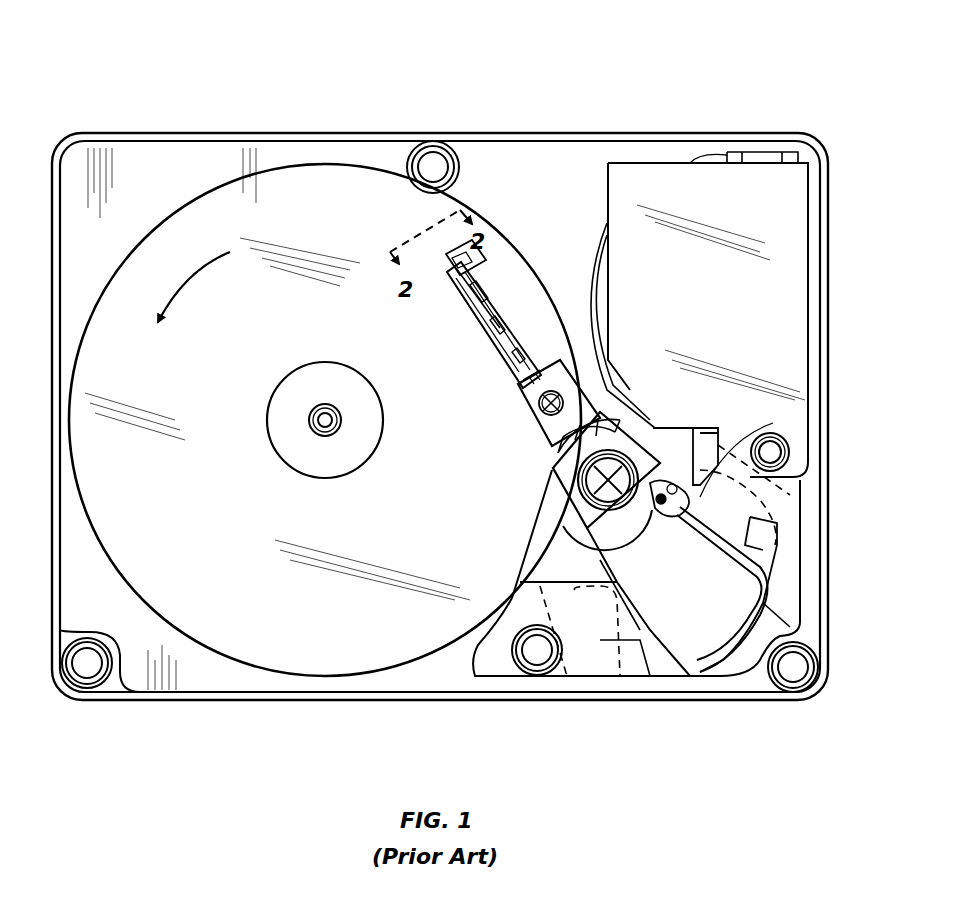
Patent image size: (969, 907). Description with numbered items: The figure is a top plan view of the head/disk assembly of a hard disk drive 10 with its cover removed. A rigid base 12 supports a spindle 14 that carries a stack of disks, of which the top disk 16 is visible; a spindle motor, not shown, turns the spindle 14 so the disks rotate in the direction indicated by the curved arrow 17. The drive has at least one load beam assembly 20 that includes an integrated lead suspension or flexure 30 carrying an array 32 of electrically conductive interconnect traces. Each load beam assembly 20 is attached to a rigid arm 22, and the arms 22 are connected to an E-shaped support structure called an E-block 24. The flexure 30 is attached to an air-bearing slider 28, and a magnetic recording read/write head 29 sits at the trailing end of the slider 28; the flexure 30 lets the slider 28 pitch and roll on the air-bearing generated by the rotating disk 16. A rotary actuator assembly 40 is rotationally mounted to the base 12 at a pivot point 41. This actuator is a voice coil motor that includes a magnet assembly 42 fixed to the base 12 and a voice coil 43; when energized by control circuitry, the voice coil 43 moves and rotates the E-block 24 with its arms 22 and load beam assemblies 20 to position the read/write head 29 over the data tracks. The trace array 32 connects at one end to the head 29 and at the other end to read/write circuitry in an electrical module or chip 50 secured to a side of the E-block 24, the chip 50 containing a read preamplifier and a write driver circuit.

The hard disk drive 10 is at (127, 72).
The rigid base 12 is at (210, 700).
The spindle 14 is at (336, 362).
The top disk 16 is at (318, 655).
The curved arrow 17 is at (192, 283).
The load beam assembly 20 is at (510, 397).
The rigid arm 22 is at (535, 418).
The E-block 24 is at (556, 469).
The air-bearing slider 28 is at (490, 261).
The read/write head 29 is at (460, 268).
The flexure 30 is at (478, 281).
The array of interconnect traces 32 is at (502, 316).
The rotary actuator assembly 40 is at (556, 545).
The pivot point 41 is at (576, 499).
The magnet assembly 42 is at (762, 450).
The voice coil 43 is at (758, 572).
The electrical module or chip 50 is at (656, 428).